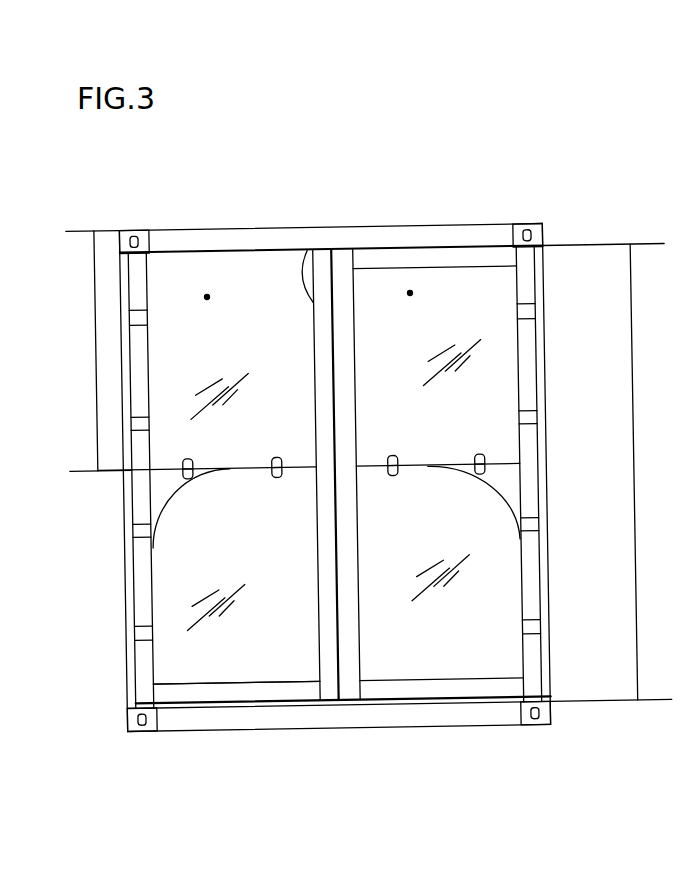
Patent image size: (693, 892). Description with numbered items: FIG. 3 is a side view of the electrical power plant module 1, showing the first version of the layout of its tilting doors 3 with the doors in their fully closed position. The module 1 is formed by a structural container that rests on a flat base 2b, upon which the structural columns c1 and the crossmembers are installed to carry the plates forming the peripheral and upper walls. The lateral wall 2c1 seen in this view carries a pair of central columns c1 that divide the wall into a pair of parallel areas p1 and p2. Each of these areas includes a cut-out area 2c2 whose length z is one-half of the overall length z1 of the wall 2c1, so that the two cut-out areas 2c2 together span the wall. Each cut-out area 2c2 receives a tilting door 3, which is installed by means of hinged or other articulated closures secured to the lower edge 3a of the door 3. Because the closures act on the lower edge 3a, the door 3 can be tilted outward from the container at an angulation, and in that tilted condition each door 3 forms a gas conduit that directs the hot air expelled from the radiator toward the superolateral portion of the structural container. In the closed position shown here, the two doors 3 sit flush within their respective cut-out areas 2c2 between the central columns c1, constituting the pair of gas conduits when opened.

The electrical power plant module 1 is at (571, 197).
The flat base 2b is at (428, 752).
The end wall 2c1 is at (250, 659).
The cut-out area 2c2 is at (312, 250).
The tilting door 3 is at (335, 475).
The lower edge of the door 3a is at (152, 546).
The parallel area p1 is at (207, 297).
The parallel area p2 is at (410, 293).
The central column c1 is at (350, 689).
The length of the cut-out area z is at (99, 350).
The overall length of the wall z1 is at (607, 473).